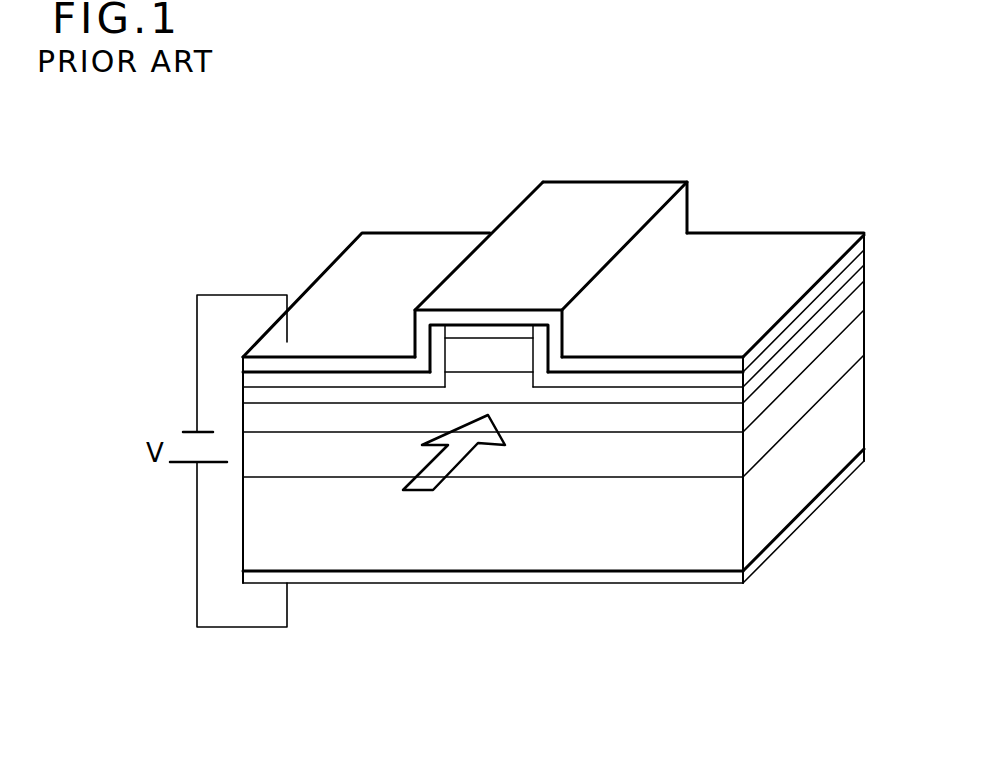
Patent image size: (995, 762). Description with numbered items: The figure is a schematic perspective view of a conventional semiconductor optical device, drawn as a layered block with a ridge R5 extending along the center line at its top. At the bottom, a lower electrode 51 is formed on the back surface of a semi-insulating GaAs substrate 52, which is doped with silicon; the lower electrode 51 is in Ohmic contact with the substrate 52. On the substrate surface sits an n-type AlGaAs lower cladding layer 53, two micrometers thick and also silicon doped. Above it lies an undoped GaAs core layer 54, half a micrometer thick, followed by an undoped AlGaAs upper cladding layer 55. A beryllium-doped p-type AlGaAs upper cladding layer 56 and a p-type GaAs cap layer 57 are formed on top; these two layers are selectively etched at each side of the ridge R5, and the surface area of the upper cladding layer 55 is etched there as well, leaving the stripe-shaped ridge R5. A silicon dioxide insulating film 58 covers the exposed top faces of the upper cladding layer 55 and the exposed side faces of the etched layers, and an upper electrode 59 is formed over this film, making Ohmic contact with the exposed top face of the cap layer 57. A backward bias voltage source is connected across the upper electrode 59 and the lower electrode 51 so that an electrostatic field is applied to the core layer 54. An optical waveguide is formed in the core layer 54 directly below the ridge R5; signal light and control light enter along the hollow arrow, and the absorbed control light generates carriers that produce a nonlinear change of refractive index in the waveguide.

The ridge R5 is at (642, 174).
The lower electrode 51 is at (758, 565).
The semi-insulating GaAs substrate 52 is at (730, 545).
The lower cladding layer 53 is at (668, 455).
The core layer 54 is at (625, 422).
The upper cladding layer 55 is at (590, 395).
The upper cladding layer 56 is at (478, 360).
The cap layer 57 is at (510, 332).
The insulating layer 58 is at (322, 383).
The upper electrode 59 is at (362, 363).